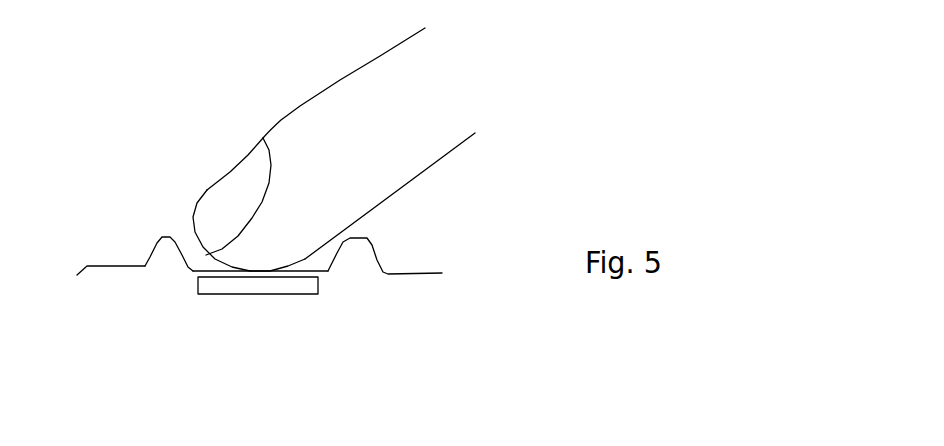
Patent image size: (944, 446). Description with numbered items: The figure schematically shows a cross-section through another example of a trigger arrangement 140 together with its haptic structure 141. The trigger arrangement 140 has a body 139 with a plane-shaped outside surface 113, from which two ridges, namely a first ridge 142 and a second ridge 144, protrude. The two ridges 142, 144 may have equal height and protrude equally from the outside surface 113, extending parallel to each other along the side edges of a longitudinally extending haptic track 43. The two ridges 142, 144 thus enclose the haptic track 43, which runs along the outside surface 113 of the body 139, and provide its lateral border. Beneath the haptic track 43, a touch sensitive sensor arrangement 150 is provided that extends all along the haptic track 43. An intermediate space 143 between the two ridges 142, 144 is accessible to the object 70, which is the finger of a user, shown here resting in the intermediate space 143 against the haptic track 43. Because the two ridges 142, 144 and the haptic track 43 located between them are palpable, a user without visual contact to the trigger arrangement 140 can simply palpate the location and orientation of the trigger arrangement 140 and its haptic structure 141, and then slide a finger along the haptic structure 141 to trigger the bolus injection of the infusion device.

The object 70 is at (292, 122).
The haptic track 43 is at (242, 262).
The outside surface 113 is at (100, 263).
The body 139 is at (162, 338).
The trigger arrangement 140 is at (208, 128).
The haptic structure 141 is at (180, 202).
The first ridge 142 is at (152, 238).
The intermediate space 143 is at (293, 255).
The second ridge 144 is at (355, 253).
The touch sensitive sensor arrangement 150 is at (238, 287).